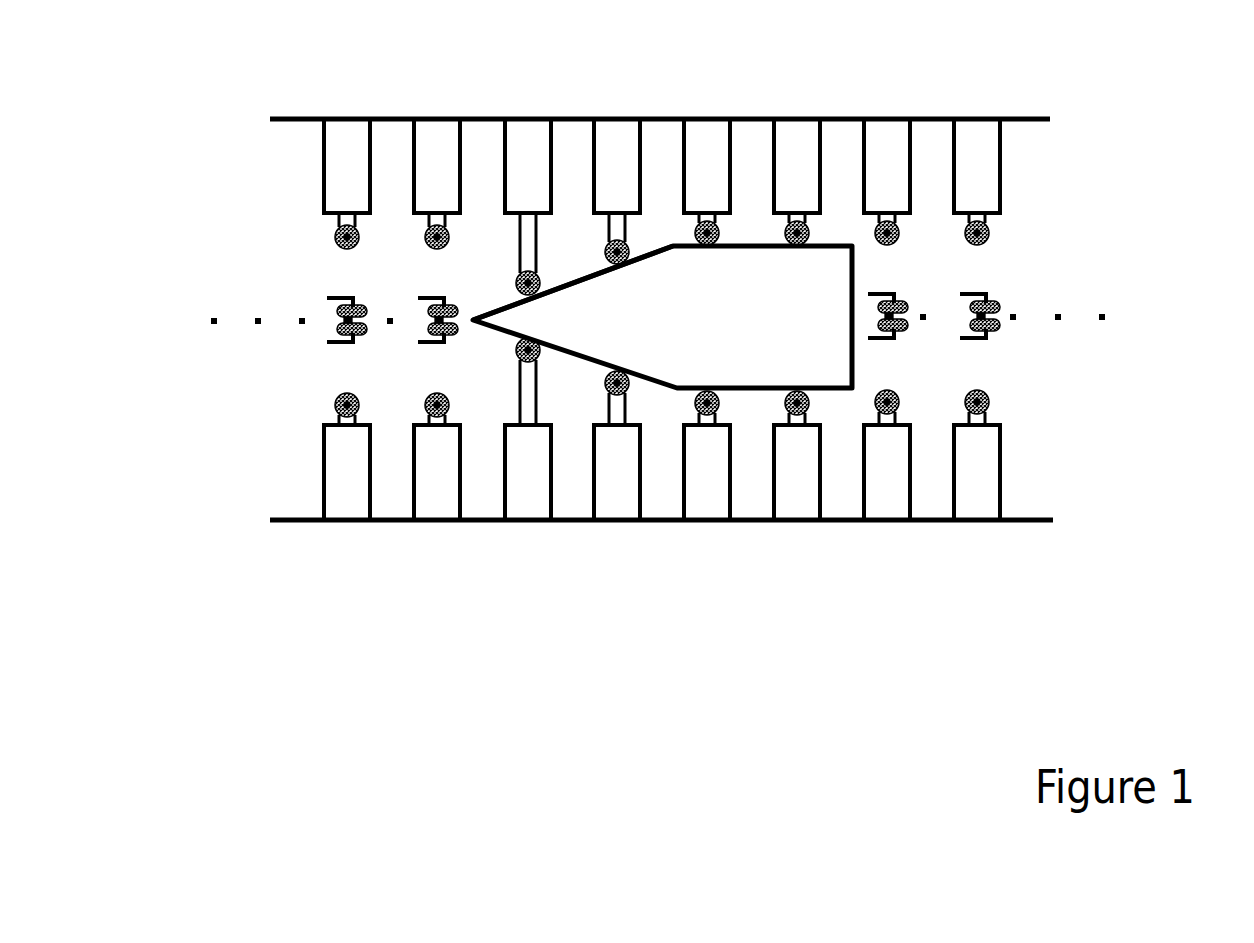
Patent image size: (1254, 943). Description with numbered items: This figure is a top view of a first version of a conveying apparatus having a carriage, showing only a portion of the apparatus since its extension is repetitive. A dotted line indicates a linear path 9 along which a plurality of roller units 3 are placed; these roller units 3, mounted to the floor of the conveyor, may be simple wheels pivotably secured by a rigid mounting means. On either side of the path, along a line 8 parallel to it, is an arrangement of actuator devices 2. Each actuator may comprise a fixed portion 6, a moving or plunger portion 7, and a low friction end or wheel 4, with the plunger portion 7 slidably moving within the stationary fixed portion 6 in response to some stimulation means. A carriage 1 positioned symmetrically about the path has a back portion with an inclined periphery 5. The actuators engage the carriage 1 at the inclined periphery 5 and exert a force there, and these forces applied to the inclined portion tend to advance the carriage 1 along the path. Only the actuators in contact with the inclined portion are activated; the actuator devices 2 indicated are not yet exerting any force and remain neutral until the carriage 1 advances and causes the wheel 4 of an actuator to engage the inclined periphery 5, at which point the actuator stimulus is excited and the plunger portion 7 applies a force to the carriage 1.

The carriage 1 is at (662, 317).
The actuator devices 2 is at (960, 130).
The roller units 3 is at (1000, 328).
The low friction end or wheel 4 is at (540, 277).
The inclined periphery 5 is at (563, 290).
The fixed portion 6 is at (530, 140).
The plunger portion 7 is at (532, 250).
The line 8 is at (300, 120).
The linear path 9 is at (1063, 313).